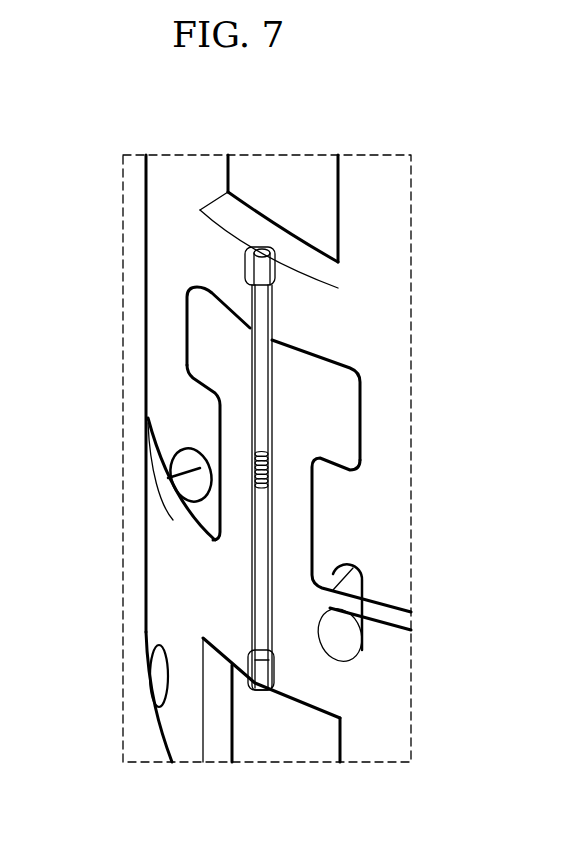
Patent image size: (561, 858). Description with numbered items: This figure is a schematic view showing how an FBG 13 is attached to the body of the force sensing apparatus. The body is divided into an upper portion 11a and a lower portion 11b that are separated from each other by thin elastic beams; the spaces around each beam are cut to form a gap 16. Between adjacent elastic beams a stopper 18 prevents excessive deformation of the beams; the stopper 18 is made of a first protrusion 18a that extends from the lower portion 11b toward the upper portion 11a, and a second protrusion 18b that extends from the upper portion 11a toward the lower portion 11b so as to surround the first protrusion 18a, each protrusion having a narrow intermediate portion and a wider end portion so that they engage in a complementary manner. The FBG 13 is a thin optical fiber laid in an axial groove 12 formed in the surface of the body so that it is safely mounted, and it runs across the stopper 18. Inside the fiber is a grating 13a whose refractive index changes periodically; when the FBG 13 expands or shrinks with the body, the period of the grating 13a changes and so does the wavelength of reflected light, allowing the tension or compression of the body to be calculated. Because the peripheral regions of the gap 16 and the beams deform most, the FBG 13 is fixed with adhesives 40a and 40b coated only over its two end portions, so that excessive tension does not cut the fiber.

The upper portion 11a is at (165, 182).
The lower portion 11b is at (165, 727).
The groove 12 is at (271, 252).
The FBG 13 is at (262, 573).
The grating 13a is at (257, 474).
The gap 16 is at (148, 454).
The stopper 18 is at (63, 318).
The first protrusion 18a is at (200, 333).
The second protrusion 18b is at (205, 418).
The adhesive 40a is at (250, 265).
The adhesive 40b is at (255, 688).